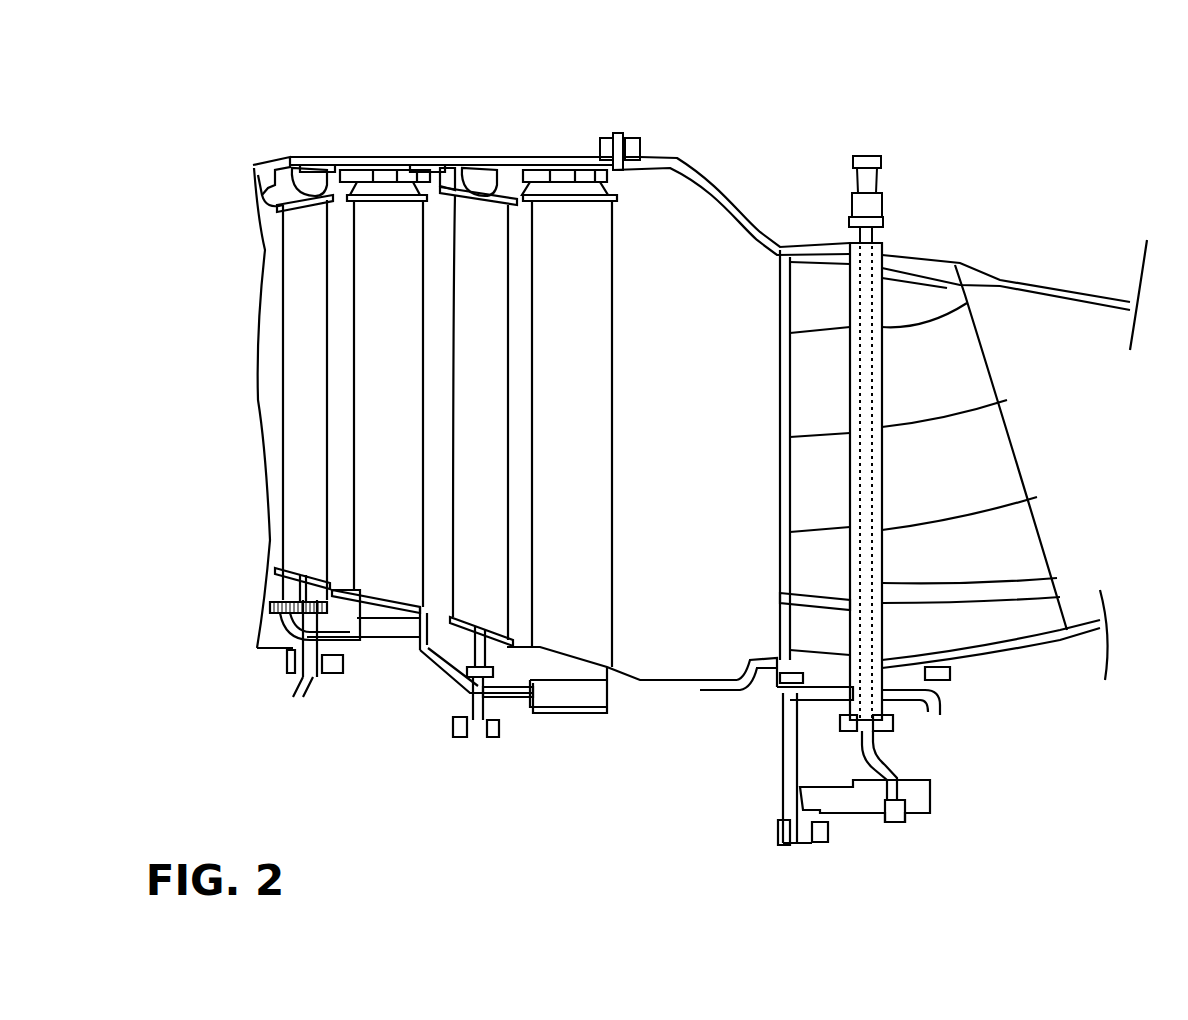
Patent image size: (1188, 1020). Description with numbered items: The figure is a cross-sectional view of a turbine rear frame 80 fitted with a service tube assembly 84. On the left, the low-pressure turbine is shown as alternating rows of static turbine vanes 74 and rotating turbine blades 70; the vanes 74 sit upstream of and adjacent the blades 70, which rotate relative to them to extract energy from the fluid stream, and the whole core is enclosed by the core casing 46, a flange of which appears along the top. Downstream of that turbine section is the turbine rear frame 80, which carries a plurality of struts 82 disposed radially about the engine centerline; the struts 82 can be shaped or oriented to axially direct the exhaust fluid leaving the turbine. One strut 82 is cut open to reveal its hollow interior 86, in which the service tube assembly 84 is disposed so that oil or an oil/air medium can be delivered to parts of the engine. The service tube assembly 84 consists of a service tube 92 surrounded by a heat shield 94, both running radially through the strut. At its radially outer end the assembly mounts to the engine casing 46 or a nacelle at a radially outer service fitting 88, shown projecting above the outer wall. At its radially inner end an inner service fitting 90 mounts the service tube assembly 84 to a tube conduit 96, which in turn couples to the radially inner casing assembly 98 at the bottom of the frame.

The core casing 46 is at (654, 158).
The turbine blades 70 is at (377, 419).
The static turbine vanes 74 is at (292, 419).
The turbine rear frame 80 is at (750, 60).
The struts 82 is at (1020, 440).
The service tube assembly 84 is at (884, 401).
The hollow interior 86 is at (940, 458).
The radially outer service fitting 88 is at (848, 198).
The inner service fitting 90 is at (902, 718).
The service tube 92 is at (872, 535).
The heat shield 94 is at (882, 627).
The tube conduit 96 is at (895, 765).
The radially inner casing assembly 98 is at (797, 850).